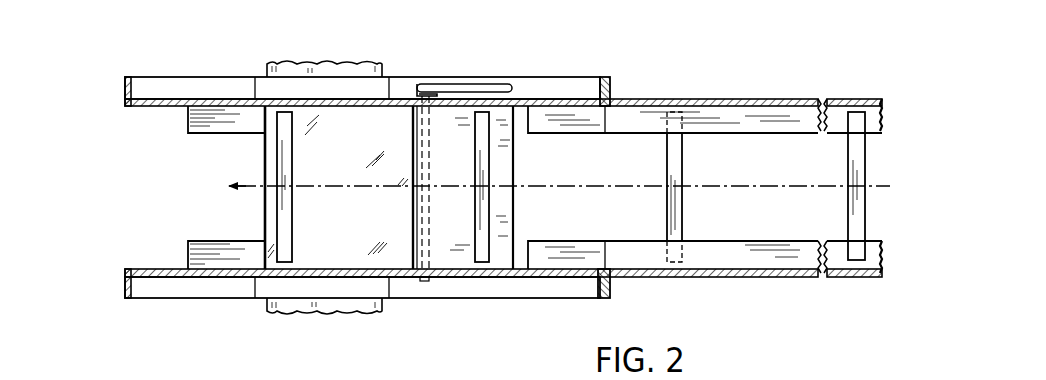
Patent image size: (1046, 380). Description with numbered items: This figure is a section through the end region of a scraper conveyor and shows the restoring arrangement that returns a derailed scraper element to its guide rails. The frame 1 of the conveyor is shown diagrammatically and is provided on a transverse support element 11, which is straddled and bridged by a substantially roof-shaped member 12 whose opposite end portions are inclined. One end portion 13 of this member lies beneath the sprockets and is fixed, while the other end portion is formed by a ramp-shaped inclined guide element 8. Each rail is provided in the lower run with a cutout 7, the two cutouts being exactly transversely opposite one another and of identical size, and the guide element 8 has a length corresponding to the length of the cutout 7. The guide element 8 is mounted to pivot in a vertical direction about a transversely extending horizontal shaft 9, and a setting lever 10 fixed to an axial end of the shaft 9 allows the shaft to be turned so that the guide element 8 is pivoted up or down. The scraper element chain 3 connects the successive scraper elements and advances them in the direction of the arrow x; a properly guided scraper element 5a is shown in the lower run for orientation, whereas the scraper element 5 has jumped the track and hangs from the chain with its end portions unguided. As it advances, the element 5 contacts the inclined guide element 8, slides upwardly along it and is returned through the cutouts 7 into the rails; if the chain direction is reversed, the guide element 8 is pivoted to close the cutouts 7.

The frame 1 is at (205, 86).
The scraper element chain 3 is at (727, 184).
The scraper element 5 is at (674, 140).
The scraper element 5a is at (288, 223).
The cutout 7 is at (521, 110).
The guide element 8 is at (458, 262).
The shaft 9 is at (424, 229).
The setting lever 10 is at (430, 84).
The transverse support element 11 is at (282, 314).
The roof-shaped member 12 is at (268, 224).
The end portion 13 is at (190, 120).